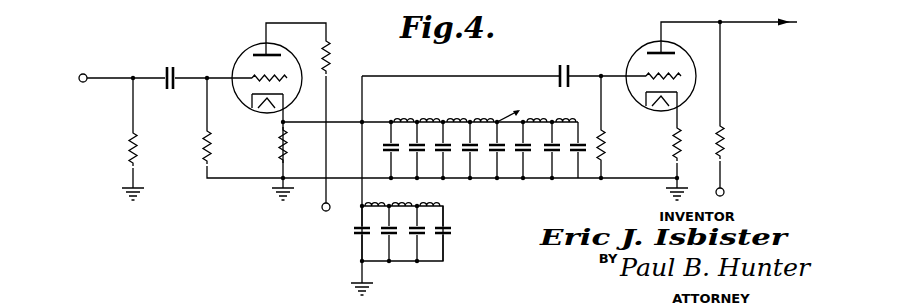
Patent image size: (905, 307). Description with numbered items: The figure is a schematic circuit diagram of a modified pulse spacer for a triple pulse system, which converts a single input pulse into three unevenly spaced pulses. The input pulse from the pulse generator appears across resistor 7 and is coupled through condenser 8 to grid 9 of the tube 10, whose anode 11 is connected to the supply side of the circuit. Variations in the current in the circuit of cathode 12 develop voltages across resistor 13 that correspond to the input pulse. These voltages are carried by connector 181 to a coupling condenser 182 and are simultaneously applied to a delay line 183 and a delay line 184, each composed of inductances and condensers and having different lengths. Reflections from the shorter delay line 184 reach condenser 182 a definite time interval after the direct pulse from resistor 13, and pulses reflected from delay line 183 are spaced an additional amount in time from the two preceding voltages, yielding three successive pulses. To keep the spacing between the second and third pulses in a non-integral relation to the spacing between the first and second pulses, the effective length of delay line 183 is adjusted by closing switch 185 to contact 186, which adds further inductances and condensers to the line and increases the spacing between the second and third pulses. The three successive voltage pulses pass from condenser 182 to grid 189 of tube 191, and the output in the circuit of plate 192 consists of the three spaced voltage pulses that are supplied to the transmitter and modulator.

The resistor 7 is at (128, 150).
The condenser 8 is at (165, 69).
The grid 9 is at (239, 72).
The tube 10 is at (268, 72).
The anode 11 is at (276, 52).
The cathode 12 is at (250, 97).
The resistor 13 is at (280, 138).
The connector 181 is at (338, 118).
The coupling condenser 182 is at (565, 67).
The delay line 183 is at (458, 143).
The delay line 184 is at (385, 238).
The switch 185 is at (505, 109).
The contact 186 is at (532, 110).
The grid 189 is at (662, 58).
The tube 191 is at (654, 44).
The plate 192 is at (672, 58).